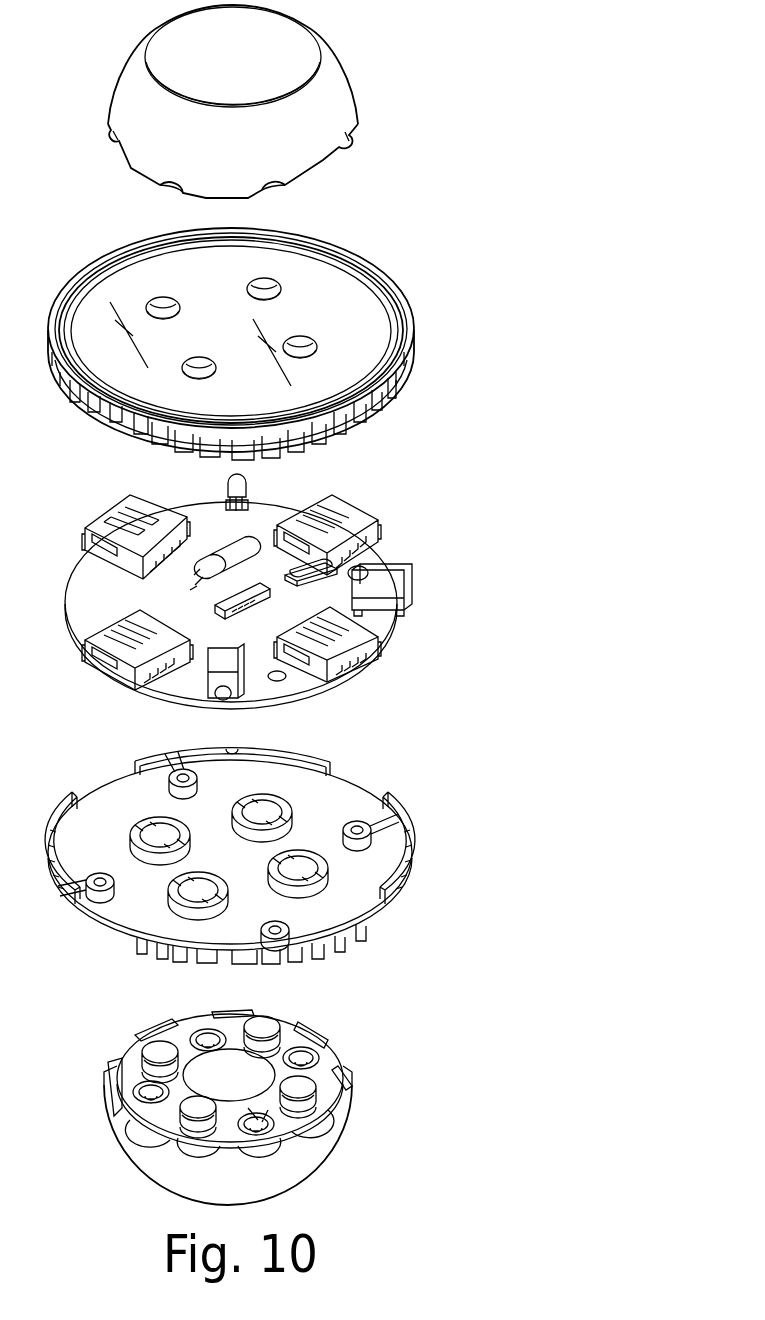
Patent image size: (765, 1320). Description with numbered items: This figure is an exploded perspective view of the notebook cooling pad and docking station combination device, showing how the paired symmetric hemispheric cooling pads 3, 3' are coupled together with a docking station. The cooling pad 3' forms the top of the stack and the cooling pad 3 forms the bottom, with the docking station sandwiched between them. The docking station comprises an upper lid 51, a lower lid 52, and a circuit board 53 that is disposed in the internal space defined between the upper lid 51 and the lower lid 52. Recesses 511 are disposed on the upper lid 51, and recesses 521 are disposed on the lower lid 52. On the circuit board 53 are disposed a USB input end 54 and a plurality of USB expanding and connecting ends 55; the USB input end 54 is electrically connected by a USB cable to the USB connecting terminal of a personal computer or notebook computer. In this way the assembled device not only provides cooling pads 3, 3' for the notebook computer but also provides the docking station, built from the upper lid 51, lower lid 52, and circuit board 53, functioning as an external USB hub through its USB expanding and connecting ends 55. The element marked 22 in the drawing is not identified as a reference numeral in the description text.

The hemispheric cooling pad 3' is at (247, 101).
The upper lid 51 is at (231, 329).
The recess 511 is at (300, 338).
The circuit board 53 is at (230, 573).
The USB expanding and connecting end 55 is at (109, 505).
The USB input end 54 is at (394, 580).
The lower lid 52 is at (238, 875).
The recess 521 is at (312, 893).
The hemispheric cooling pad 3 is at (230, 1114).
The button 22 is at (278, 1022).